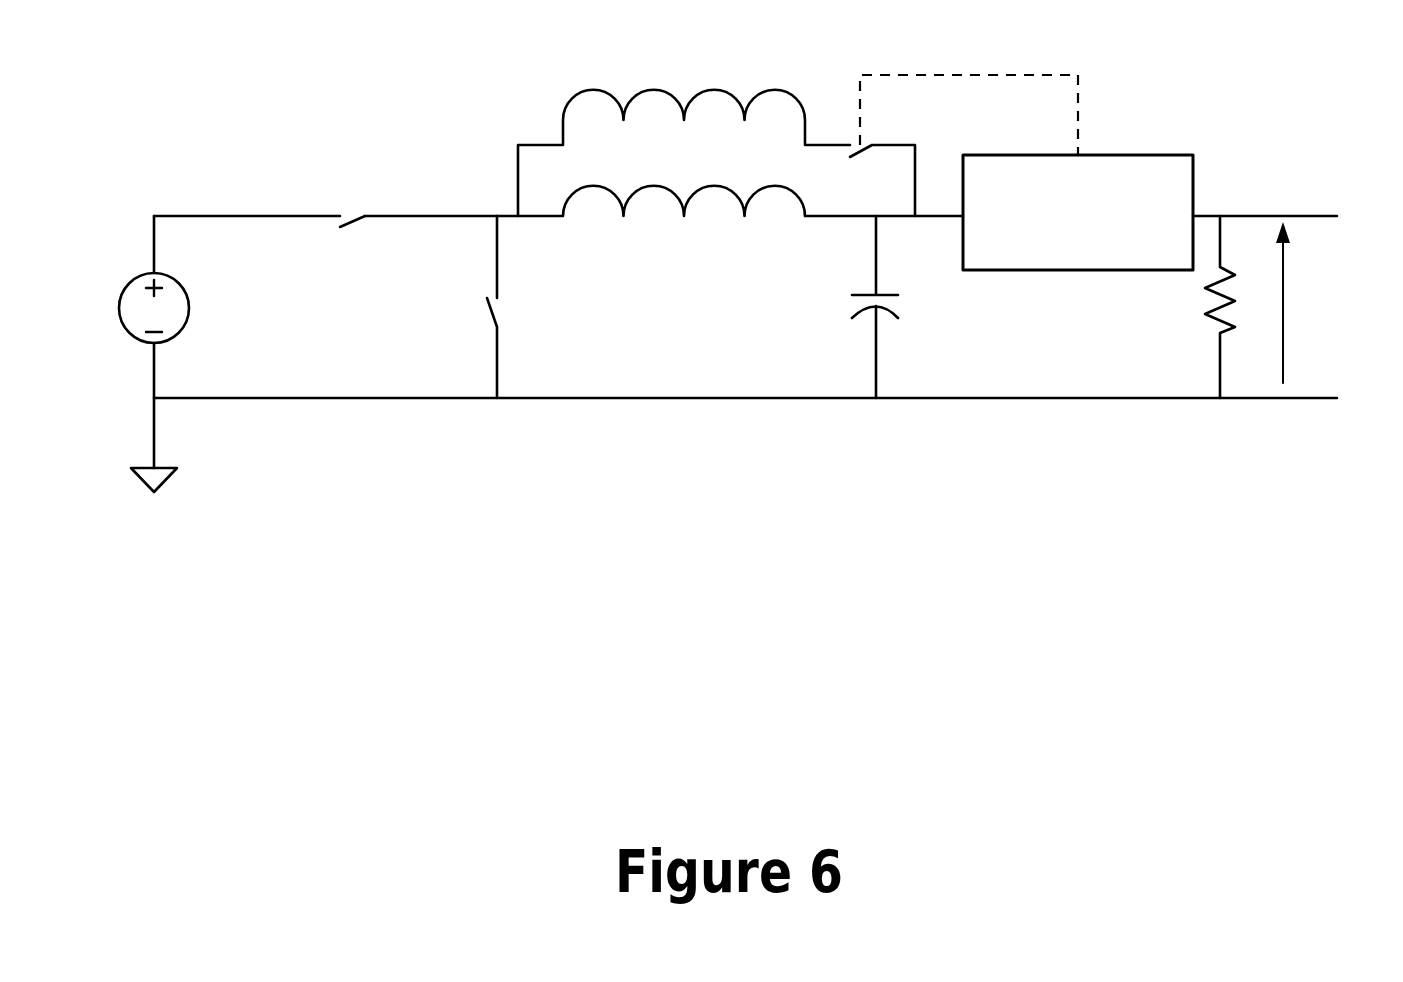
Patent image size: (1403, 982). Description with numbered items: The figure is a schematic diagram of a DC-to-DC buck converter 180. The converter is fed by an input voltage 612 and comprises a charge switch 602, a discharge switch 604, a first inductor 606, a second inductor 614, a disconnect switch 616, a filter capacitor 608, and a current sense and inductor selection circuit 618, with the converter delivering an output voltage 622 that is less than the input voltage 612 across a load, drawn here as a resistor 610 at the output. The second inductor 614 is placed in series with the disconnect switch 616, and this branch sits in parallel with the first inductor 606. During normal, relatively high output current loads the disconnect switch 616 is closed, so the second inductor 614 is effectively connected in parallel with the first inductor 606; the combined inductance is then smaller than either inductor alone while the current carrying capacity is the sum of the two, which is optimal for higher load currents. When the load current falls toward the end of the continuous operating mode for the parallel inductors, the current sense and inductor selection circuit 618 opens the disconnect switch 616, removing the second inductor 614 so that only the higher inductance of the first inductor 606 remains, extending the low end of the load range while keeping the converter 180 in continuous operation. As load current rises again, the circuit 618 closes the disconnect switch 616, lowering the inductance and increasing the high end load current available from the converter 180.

The DC-to-DC buck converter 180 is at (780, 556).
The charge switch 602 is at (352, 223).
The discharge switch 604 is at (487, 315).
The first inductor 606 is at (623, 225).
The filter capacitor 608 is at (848, 310).
The load resistor 610 is at (1207, 305).
The input voltage 612 is at (133, 337).
The second inductor 614 is at (667, 90).
The disconnect switch 616 is at (863, 155).
The current sense and inductor selection circuit 618 is at (1128, 155).
The output voltage 622 is at (1386, 313).